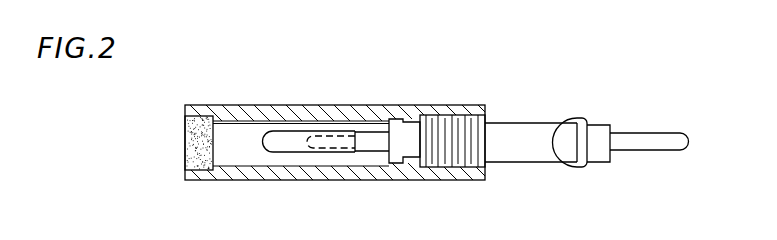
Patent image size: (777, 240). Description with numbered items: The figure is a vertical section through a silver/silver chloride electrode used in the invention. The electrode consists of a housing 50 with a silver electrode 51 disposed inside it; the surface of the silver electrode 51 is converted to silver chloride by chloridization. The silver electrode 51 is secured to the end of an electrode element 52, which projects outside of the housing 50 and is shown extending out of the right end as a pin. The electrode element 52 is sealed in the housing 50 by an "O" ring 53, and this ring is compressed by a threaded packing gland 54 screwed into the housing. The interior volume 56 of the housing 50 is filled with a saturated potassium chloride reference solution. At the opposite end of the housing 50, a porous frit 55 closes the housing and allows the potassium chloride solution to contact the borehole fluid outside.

The housing 50 is at (365, 180).
The silver electrode 51 is at (280, 131).
The electrode element 52 is at (324, 133).
The "O" ring 53 is at (395, 119).
The threaded packing gland 54 is at (458, 115).
The porous frit 55 is at (186, 143).
The volume 56 is at (240, 148).